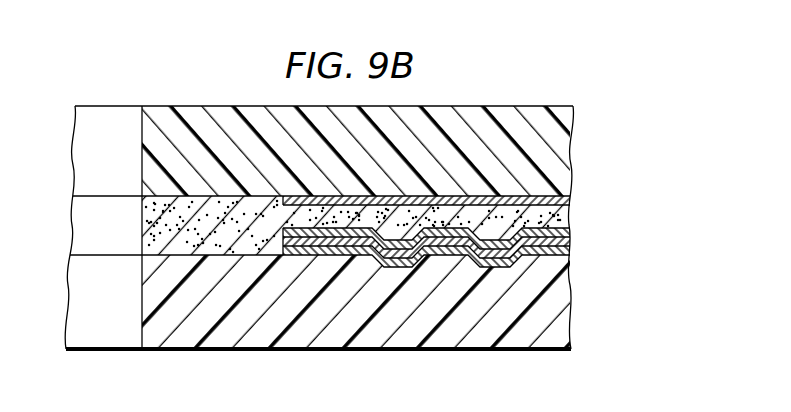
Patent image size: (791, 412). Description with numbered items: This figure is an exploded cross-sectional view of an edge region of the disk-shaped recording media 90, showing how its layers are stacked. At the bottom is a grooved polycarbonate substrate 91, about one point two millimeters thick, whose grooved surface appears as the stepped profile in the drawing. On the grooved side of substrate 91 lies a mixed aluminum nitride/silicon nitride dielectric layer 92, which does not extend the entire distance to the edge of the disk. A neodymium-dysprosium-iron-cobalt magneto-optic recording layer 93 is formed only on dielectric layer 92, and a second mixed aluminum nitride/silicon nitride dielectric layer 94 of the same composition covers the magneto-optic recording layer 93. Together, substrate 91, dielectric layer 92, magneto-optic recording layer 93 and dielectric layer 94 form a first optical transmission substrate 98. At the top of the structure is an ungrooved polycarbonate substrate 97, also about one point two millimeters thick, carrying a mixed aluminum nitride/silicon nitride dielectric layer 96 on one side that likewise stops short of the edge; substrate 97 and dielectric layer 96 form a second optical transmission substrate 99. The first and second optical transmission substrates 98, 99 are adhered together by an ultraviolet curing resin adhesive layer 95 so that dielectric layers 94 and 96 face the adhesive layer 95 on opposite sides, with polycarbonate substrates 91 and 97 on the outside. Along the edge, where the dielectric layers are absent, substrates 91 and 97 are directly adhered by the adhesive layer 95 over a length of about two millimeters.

The disk-shaped recording media 90 is at (390, 225).
The polycarbonate substrate 91 is at (384, 302).
The mixed aluminum nitride/silicon nitride dielectric layer 92 is at (570, 257).
The magneto-optic recording layer 93 is at (570, 247).
The mixed aluminum nitride/silicon nitride dielectric layer 94 is at (568, 231).
The ultraviolet curing resin adhesive layer 95 is at (562, 215).
The mixed aluminum nitride/silicon nitride dielectric layer 96 is at (570, 196).
The ungrooved polycarbonate substrate 97 is at (560, 156).
The first optical transmission substrate 98 is at (411, 285).
The second optical transmission substrate 99 is at (409, 155).